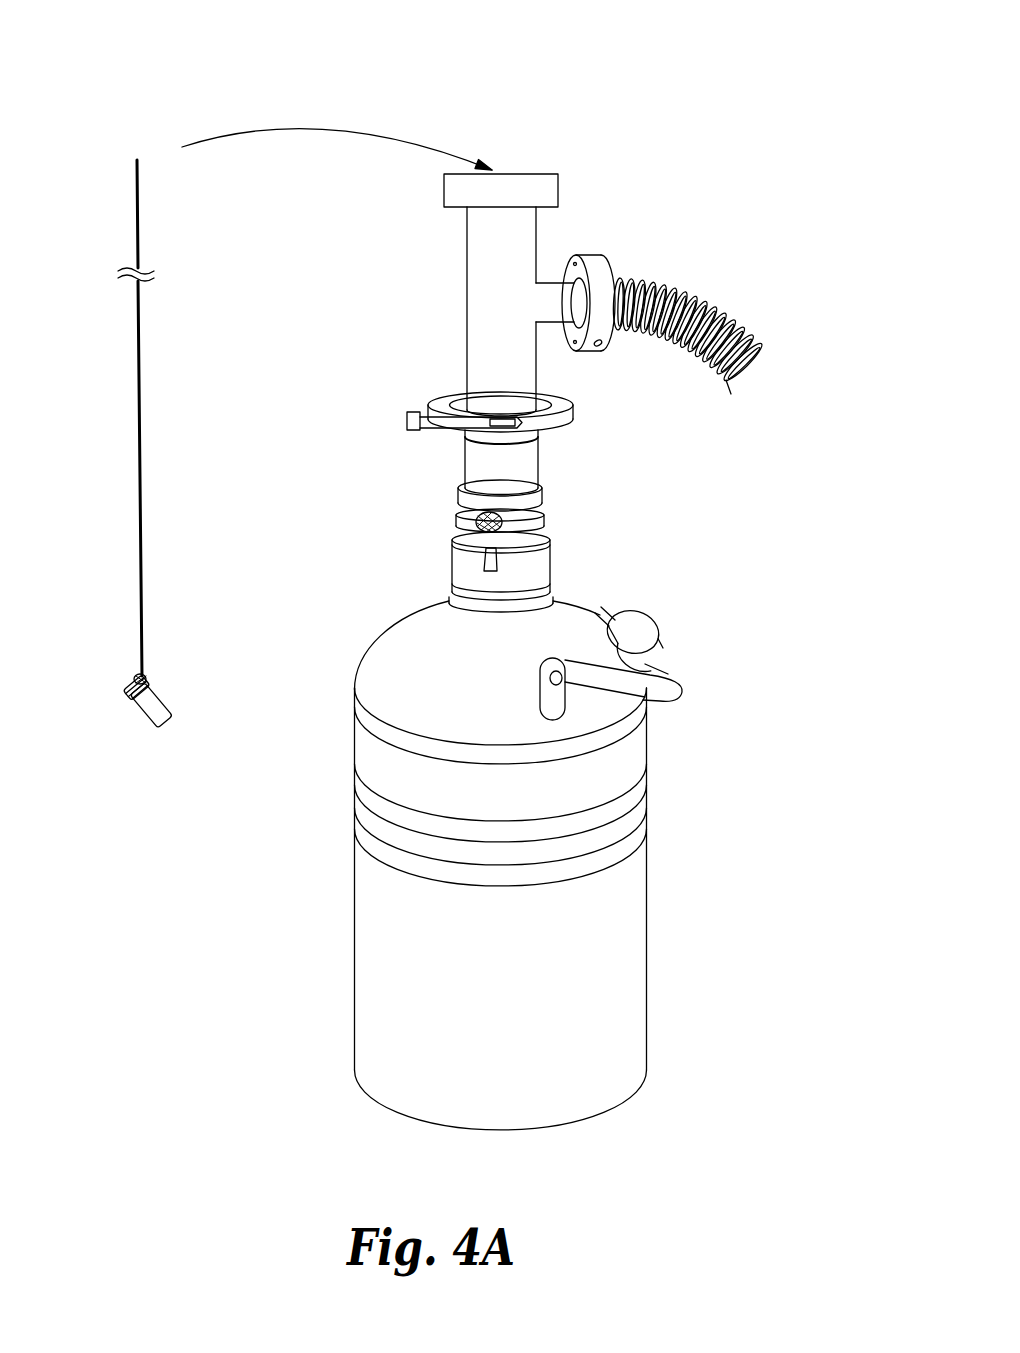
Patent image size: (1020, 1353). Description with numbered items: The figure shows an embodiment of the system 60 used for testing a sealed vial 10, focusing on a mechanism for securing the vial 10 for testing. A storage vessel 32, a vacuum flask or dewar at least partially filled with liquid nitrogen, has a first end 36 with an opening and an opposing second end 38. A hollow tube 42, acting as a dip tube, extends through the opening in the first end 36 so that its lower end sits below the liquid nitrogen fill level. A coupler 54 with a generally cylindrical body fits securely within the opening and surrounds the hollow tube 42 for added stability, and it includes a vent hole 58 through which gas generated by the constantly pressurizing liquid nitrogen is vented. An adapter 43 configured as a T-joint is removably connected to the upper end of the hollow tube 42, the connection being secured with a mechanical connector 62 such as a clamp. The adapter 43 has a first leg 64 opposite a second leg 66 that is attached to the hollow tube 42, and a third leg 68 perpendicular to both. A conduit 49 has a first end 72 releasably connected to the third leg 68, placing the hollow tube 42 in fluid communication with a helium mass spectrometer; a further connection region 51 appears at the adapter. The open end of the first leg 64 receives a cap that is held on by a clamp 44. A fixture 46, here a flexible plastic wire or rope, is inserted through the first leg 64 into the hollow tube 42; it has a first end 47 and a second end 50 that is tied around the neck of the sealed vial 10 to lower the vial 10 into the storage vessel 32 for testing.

The system 60 is at (619, 88).
The clamp 44 is at (490, 200).
The adapter 43 is at (487, 283).
The first leg 64 is at (525, 229).
The second leg 66 is at (526, 360).
The third leg 68 is at (562, 292).
The flange back face 51 is at (600, 330).
The first end of conduit 72 is at (622, 282).
The conduit 49 is at (746, 332).
The mechanical connector 62 is at (565, 412).
The hollow tube 42 is at (480, 472).
The vent hole 58 is at (482, 550).
The coupler 54 is at (542, 570).
The first end 36 is at (404, 634).
The storage vessel 32 is at (521, 1043).
The second end 38 is at (647, 1080).
The first end of fixture 47 is at (137, 160).
The fixture 46 is at (137, 420).
The second end of fixture 50 is at (148, 680).
The sealed vial 10 is at (160, 712).